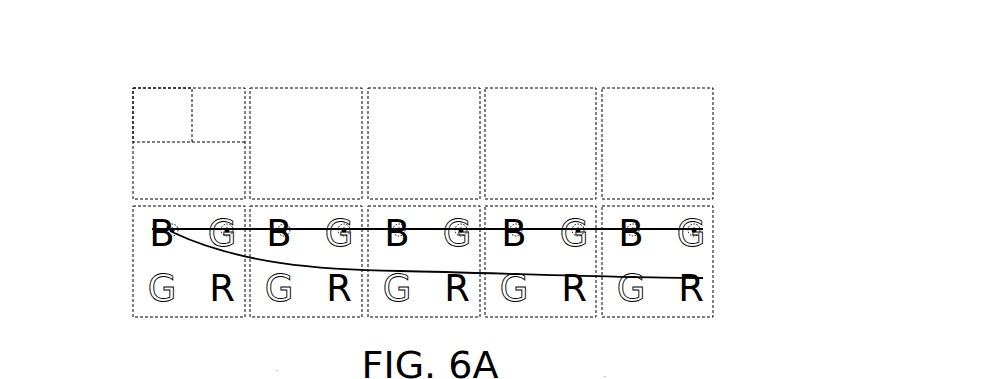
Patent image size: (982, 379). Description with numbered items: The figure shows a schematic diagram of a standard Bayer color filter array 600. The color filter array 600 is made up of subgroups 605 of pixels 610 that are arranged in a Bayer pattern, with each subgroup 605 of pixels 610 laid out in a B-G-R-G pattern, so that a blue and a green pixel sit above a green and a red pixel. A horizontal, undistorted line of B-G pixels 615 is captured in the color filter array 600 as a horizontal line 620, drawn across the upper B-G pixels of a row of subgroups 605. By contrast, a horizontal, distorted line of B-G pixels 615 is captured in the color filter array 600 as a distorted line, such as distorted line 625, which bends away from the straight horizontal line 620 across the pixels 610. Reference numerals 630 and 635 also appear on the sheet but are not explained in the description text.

The color filter array 600 is at (328, 88).
The subgroup 605 is at (193, 88).
The pixel 610 is at (132, 177).
The B-G pixels 615 is at (698, 226).
The horizontal line 620 is at (657, 223).
The distorted line 625 is at (657, 278).
The pixel row 630 is at (277, 372).
The pixel row 635 is at (605, 377).